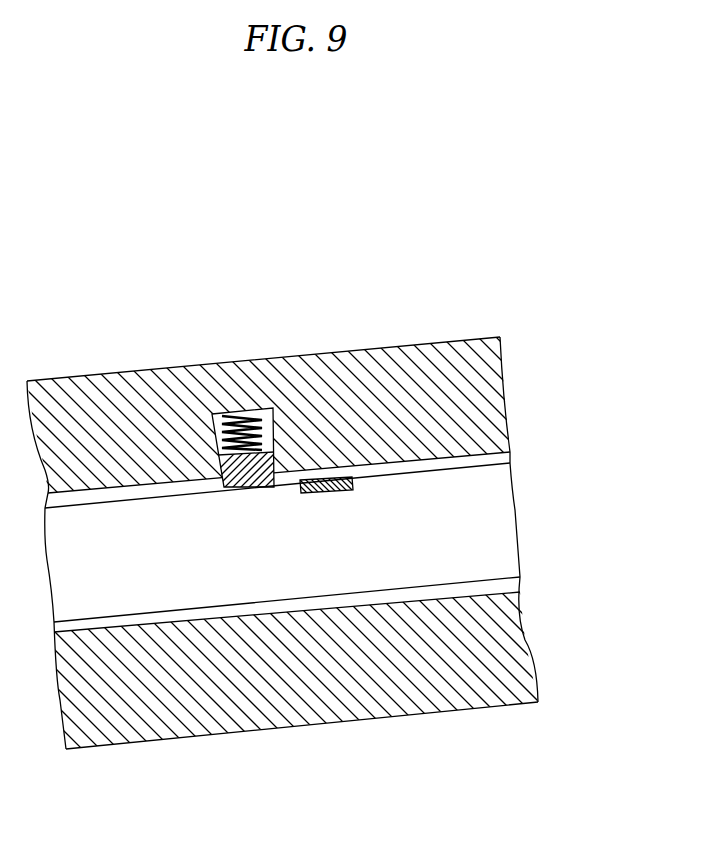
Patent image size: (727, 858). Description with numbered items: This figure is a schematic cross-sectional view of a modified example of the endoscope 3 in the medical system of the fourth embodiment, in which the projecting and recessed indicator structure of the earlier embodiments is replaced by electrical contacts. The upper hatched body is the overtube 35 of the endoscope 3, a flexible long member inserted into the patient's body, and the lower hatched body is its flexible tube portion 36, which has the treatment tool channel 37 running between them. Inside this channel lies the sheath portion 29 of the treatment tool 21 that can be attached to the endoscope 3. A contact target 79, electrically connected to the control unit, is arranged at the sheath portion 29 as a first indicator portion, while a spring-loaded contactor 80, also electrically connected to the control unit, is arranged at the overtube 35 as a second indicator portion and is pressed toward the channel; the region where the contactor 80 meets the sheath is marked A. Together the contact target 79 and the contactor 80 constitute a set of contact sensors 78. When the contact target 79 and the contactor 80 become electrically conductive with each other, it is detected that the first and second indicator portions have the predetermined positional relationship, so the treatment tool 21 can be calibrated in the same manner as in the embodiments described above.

The endoscope 3 is at (393, 226).
The overtube 35 is at (445, 340).
The contact sensors 78 is at (242, 400).
The contactor 80 is at (222, 485).
The contact target 79 is at (332, 492).
The contact portion A is at (255, 508).
The sheath portion 29 is at (282, 646).
The treatment tool 21 is at (413, 563).
The treatment tool channel 37 is at (157, 625).
The flexible tube portion 36 is at (225, 702).